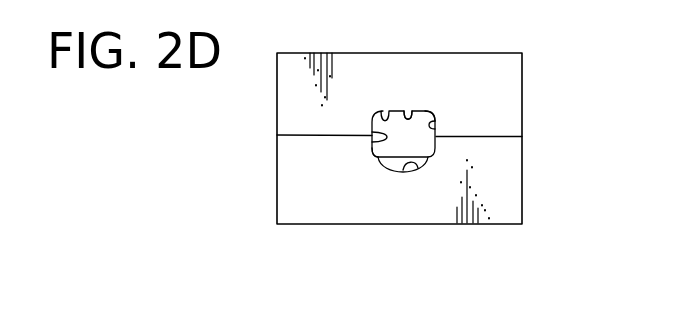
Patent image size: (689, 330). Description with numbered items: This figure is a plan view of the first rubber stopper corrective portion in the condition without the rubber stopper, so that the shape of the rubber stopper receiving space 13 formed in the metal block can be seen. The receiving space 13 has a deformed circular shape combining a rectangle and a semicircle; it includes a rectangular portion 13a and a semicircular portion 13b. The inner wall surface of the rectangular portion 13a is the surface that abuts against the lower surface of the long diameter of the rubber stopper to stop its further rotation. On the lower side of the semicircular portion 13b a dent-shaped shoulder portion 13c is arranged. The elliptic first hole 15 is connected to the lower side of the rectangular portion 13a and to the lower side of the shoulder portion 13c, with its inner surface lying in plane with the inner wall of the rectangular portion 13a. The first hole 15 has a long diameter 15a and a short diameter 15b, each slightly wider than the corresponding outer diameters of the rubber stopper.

The rubber stopper receiving space 13 is at (393, 110).
The rectangular portion 13a is at (436, 130).
The semicircular portion 13b is at (417, 165).
The shoulder portion 13c is at (381, 160).
The first hole 15 is at (420, 111).
The long diameter 15a is at (411, 131).
The short diameter 15b is at (383, 145).